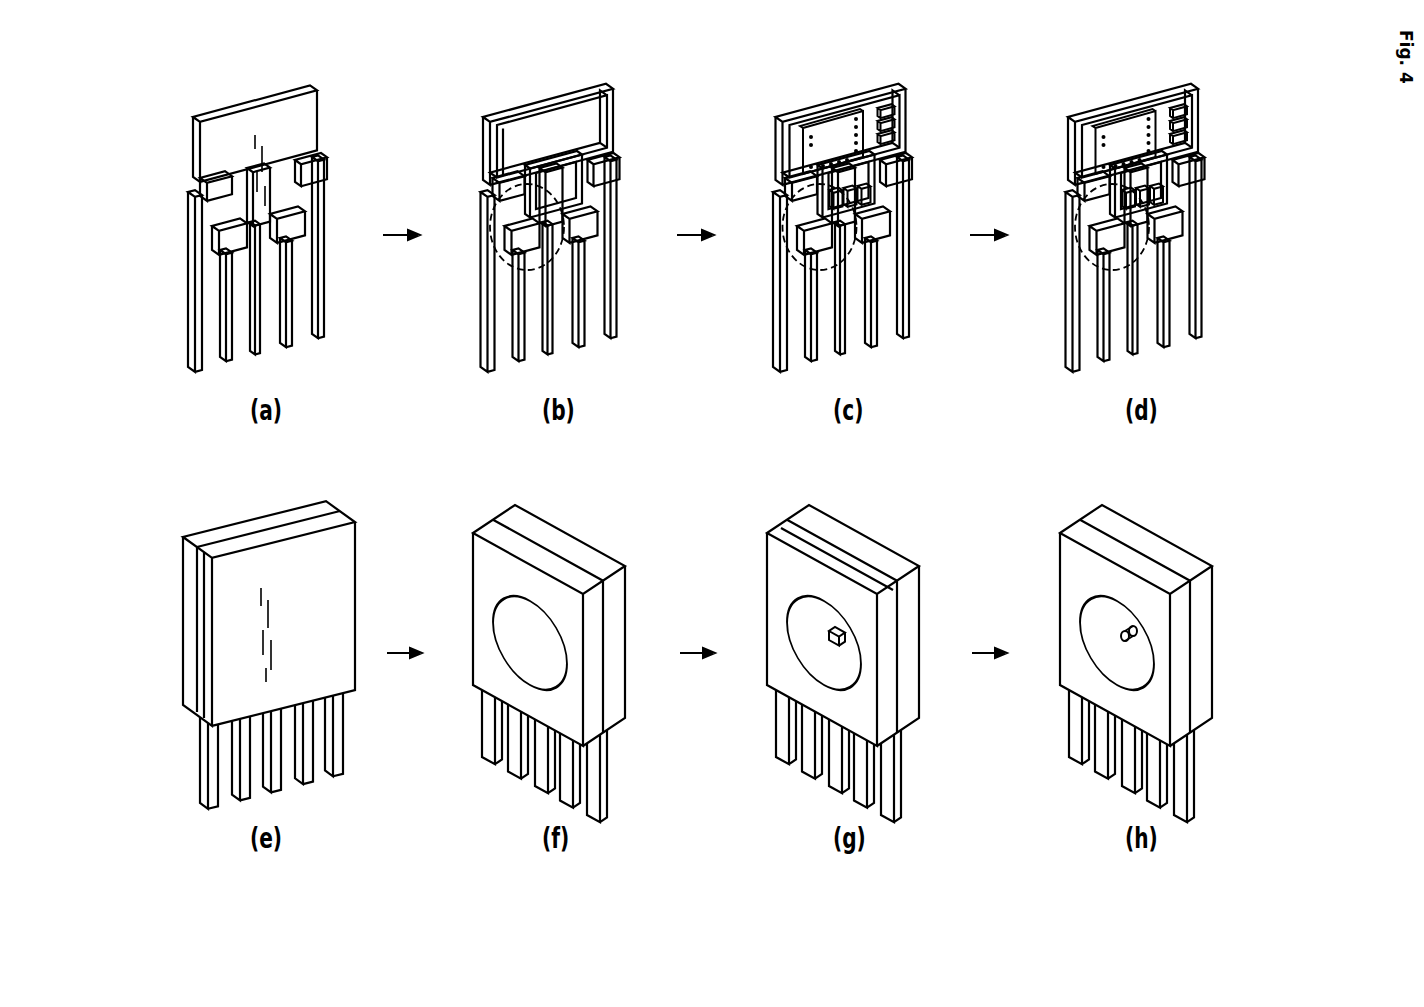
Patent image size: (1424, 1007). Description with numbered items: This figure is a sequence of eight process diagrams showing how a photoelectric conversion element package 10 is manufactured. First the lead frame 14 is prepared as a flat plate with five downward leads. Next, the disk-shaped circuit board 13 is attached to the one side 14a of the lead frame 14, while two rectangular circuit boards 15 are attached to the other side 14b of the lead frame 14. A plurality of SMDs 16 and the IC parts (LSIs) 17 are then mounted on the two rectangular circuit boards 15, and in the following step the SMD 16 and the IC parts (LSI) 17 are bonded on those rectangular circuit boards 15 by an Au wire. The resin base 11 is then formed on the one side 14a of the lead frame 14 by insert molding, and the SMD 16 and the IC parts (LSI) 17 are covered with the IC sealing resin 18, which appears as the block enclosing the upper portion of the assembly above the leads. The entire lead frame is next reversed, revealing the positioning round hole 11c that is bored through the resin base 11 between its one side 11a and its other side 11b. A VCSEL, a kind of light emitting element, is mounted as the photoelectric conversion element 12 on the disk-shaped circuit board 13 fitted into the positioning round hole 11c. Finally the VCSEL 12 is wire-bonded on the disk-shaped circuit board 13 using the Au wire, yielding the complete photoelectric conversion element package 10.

The photoelectric conversion element package 10 is at (1229, 616).
The resin base 11 is at (190, 633).
The one side of the resin base 11a is at (778, 570).
The other side of the resin base 11b is at (783, 533).
The positioning round hole 11c is at (822, 667).
The photoelectric conversion element 12 is at (853, 637).
The disk-shaped circuit board 13 is at (500, 257).
The lead frame 14 is at (250, 118).
The one side of the lead frame 14a is at (590, 92).
The other side of the lead frame 14b is at (617, 112).
The rectangular circuit board 15 is at (573, 198).
The SMD 16 is at (870, 195).
The IC part (LSI) 17 is at (828, 135).
The IC sealing resin 18 is at (340, 560).